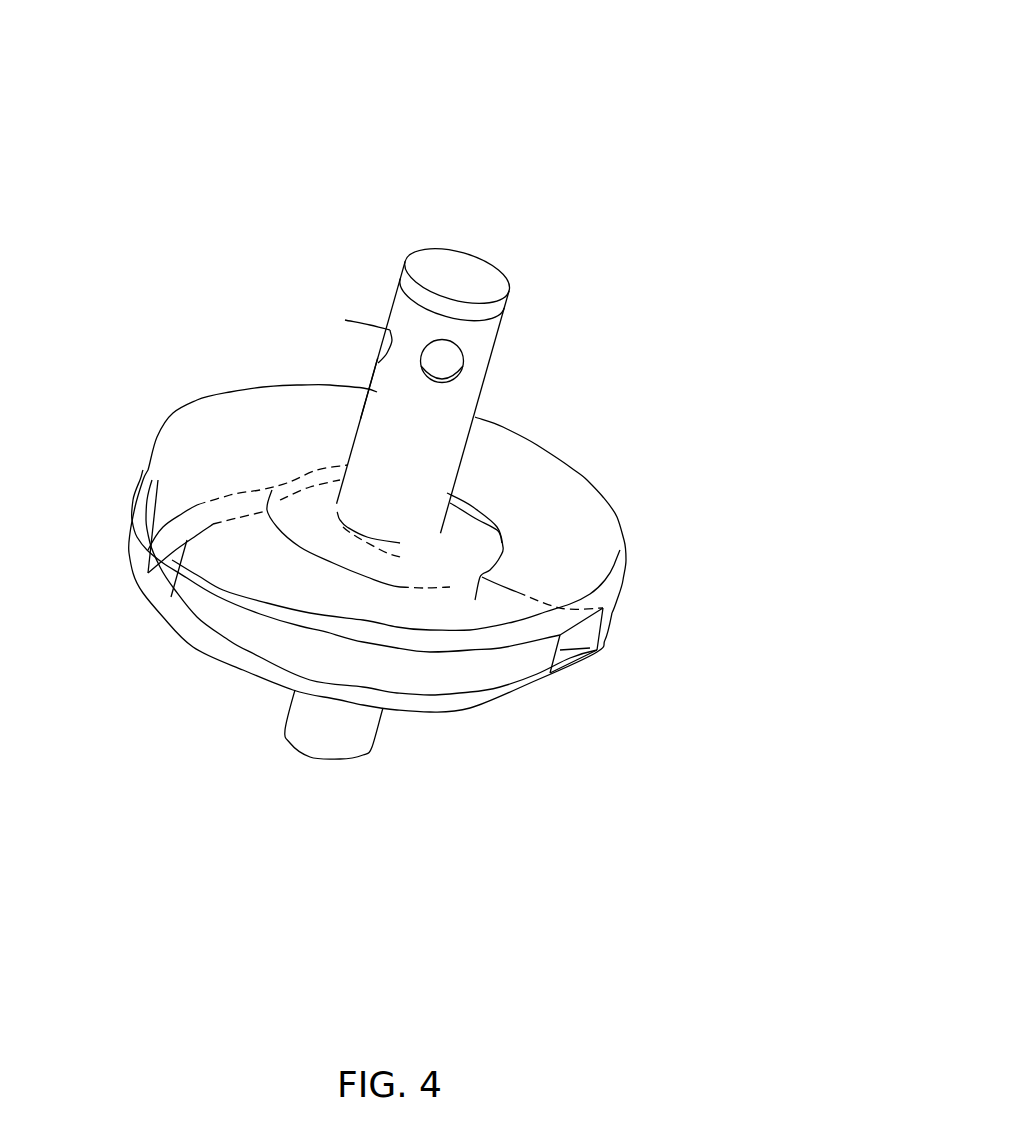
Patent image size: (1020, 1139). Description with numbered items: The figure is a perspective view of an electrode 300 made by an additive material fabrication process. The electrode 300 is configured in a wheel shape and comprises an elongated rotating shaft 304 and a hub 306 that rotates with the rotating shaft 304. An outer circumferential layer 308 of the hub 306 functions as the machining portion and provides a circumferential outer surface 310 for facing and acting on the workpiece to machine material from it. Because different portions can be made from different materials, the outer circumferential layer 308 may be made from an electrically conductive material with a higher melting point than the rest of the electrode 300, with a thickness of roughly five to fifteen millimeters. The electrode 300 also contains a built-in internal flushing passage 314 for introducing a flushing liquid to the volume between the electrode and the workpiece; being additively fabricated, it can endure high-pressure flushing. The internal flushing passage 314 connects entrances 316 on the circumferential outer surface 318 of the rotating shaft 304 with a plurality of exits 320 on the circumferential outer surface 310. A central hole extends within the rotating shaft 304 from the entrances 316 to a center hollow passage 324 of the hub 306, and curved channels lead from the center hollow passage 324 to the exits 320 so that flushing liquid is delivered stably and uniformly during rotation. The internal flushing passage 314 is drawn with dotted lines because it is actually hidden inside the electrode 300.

The electrode 300 is at (637, 130).
The rotating shaft 304 is at (482, 340).
The hub 306 is at (555, 527).
The outer circumferential layer 308 is at (605, 573).
The circumferential outer surface 310 is at (433, 677).
The internal flushing passage 314 is at (312, 497).
The entrances 316 is at (430, 363).
The circumferential outer surface of the rotating shaft 318 is at (377, 393).
The exits 320 is at (165, 577).
The center hollow passage 324 is at (293, 517).